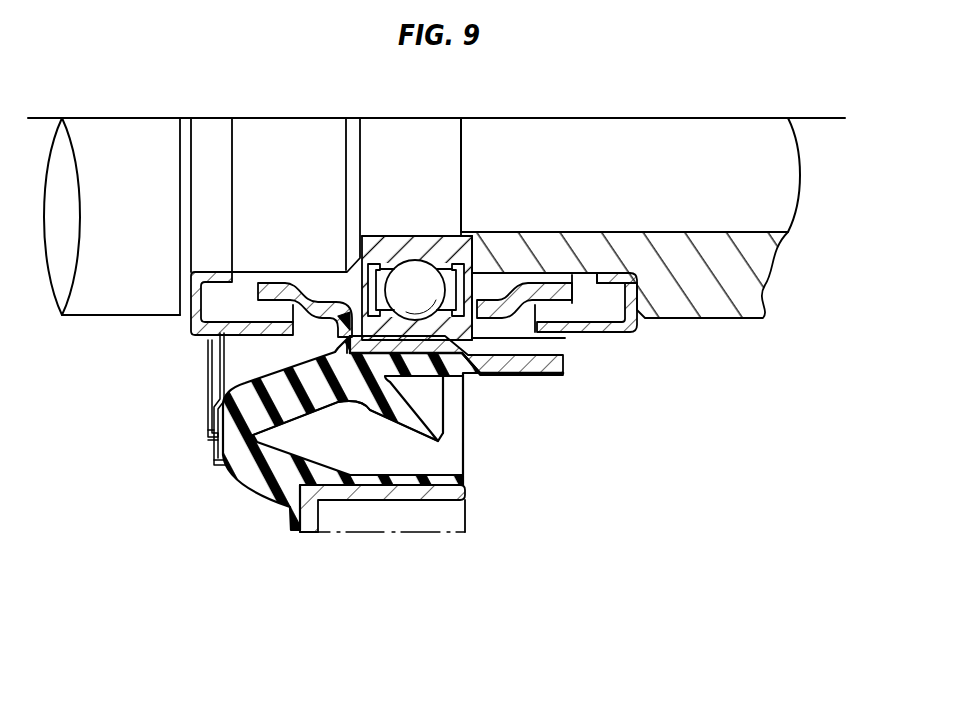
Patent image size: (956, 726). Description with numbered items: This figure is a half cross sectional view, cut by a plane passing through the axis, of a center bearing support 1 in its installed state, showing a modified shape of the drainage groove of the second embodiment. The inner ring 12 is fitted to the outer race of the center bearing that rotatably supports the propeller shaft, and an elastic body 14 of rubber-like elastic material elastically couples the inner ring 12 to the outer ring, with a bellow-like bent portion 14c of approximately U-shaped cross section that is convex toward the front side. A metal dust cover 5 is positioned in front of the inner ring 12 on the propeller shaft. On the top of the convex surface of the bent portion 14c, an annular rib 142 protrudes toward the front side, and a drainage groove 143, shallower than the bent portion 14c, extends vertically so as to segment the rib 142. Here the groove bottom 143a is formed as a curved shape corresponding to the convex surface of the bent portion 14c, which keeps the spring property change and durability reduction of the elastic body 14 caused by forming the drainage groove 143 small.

The center bearing support 1 is at (300, 555).
The dust cover 5 is at (210, 347).
The inner ring 12 is at (292, 290).
The elastic body 14 is at (370, 454).
The bellow-like bent portion 14c is at (243, 441).
The rib 142 is at (205, 436).
The drainage groove 143 is at (215, 420).
The groove bottom 143a is at (213, 451).